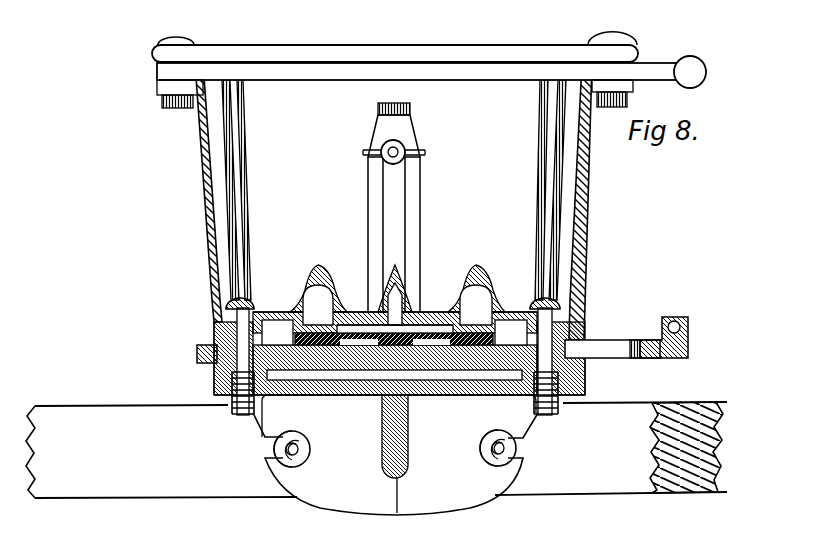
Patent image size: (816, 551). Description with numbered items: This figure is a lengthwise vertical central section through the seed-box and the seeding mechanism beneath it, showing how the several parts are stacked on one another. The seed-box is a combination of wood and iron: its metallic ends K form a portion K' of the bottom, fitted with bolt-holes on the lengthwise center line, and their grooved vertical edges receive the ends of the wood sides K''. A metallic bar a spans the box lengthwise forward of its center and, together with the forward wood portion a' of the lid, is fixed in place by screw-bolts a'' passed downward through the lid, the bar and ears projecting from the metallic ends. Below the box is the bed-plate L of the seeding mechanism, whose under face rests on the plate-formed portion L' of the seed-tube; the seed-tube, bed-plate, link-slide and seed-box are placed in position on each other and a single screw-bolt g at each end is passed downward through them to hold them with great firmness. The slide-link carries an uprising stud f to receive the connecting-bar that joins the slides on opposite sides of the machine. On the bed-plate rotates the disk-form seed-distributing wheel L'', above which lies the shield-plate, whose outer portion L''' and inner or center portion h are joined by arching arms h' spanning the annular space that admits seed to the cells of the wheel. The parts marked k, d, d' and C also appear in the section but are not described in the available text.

The metallic bar a is at (431, 82).
The forward wood portion of the lid a' is at (395, 53).
The screw-bolts a'' is at (397, 29).
The metallic ends K is at (392, 229).
The bottom portion of metallic ends K' is at (393, 191).
The wood sides K'' is at (422, 207).
The pivot pin of central column k is at (394, 144).
The inner portion of shield-plate h is at (395, 310).
The arching arms h' is at (397, 285).
The screw-bolt g is at (393, 301).
The bed-plate L is at (399, 410).
The plate-formed portion of the seed-tube L' is at (395, 455).
The seed-distributing wheel L'' is at (395, 328).
The outer portion of shield-plate L''' is at (395, 303).
The supporting plate d is at (612, 349).
The end blocks of plate d' is at (442, 340).
The uprising stud f is at (674, 316).
The frame beam C is at (376, 450).